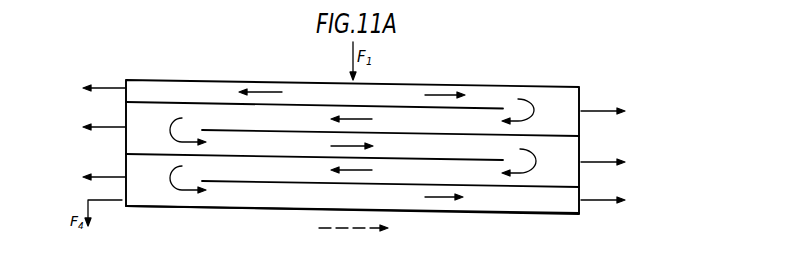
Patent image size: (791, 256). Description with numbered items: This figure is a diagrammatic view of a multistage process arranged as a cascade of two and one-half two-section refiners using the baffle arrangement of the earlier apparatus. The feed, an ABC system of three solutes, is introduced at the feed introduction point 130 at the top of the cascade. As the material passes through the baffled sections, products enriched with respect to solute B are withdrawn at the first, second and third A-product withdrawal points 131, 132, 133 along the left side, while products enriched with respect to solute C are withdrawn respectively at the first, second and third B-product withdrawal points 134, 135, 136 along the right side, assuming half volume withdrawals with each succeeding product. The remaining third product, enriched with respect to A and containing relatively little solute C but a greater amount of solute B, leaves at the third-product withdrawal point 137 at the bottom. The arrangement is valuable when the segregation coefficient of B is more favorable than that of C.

The feed introduction point 130 is at (359, 80).
The first A-product withdrawal point 131 is at (126, 79).
The second A-product withdrawal point 132 is at (125, 126).
The third A-product withdrawal point 133 is at (125, 176).
The first B-product withdrawal point 134 is at (582, 109).
The second B-product withdrawal point 135 is at (582, 161).
The third B-product withdrawal point 136 is at (582, 199).
The third-product withdrawal point 137 is at (124, 206).